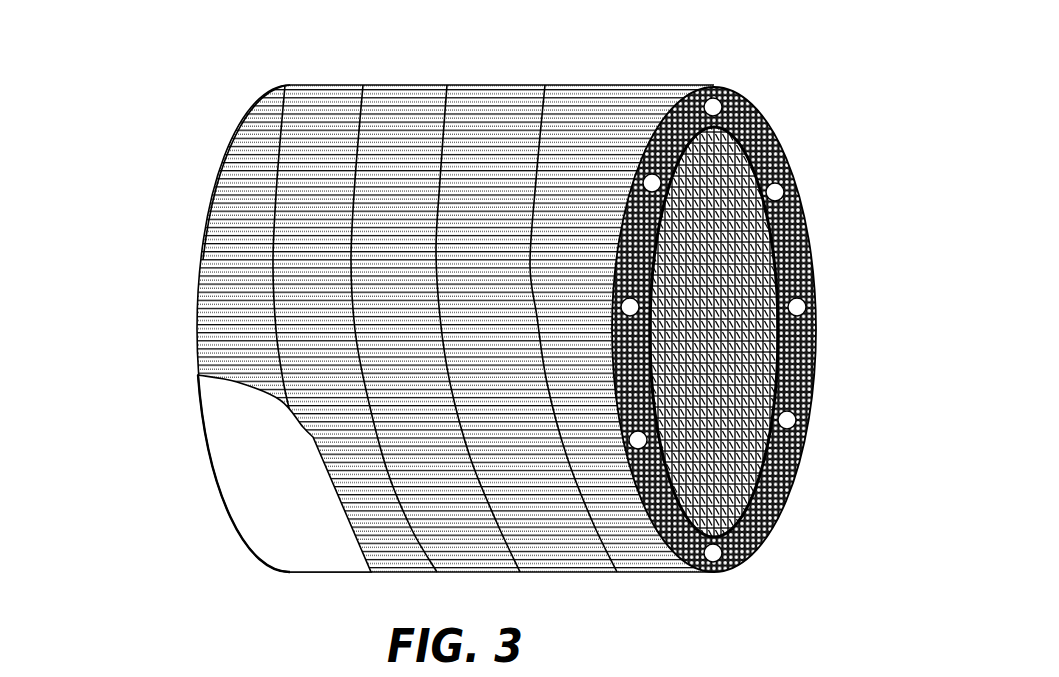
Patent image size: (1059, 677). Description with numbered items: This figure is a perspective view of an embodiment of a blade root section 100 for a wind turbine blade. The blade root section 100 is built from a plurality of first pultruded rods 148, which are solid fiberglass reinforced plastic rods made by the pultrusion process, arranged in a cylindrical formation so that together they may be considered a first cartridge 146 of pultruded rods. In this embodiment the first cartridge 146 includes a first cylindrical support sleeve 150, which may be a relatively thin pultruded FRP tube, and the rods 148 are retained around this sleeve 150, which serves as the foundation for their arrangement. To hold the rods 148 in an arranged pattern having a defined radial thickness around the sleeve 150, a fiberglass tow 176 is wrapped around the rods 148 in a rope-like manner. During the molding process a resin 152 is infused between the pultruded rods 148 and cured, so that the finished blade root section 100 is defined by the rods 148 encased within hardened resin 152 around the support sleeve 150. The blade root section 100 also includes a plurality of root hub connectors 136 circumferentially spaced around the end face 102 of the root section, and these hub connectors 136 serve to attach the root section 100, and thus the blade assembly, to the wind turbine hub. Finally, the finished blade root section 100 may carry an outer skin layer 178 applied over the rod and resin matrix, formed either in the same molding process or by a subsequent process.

The blade root section 100 is at (463, 329).
The end face 102 is at (807, 392).
The root hub connectors 136 is at (723, 571).
The first cartridge 146 is at (613, 106).
The first pultruded rods 148 is at (735, 357).
The first cylindrical support sleeve 150 is at (738, 296).
The resin 152 is at (802, 215).
The fiberglass tow 176 is at (277, 132).
The outer skin layer 178 is at (242, 485).